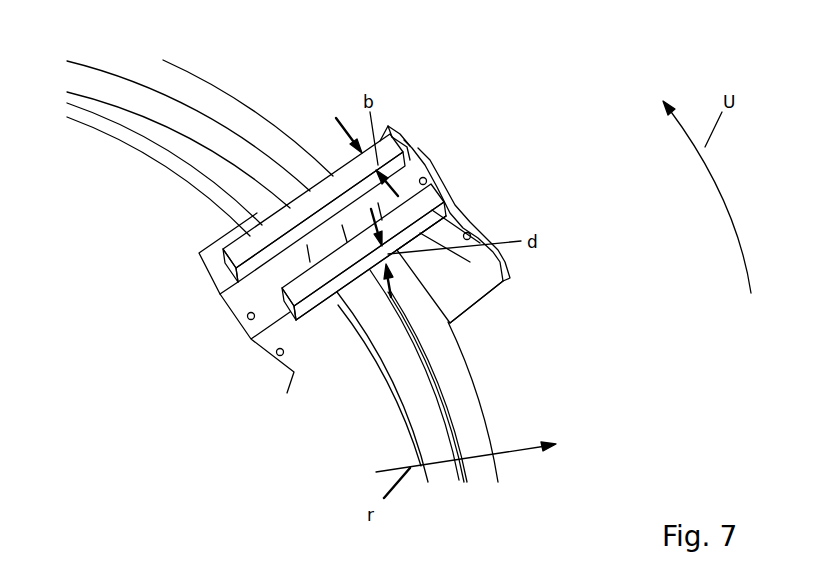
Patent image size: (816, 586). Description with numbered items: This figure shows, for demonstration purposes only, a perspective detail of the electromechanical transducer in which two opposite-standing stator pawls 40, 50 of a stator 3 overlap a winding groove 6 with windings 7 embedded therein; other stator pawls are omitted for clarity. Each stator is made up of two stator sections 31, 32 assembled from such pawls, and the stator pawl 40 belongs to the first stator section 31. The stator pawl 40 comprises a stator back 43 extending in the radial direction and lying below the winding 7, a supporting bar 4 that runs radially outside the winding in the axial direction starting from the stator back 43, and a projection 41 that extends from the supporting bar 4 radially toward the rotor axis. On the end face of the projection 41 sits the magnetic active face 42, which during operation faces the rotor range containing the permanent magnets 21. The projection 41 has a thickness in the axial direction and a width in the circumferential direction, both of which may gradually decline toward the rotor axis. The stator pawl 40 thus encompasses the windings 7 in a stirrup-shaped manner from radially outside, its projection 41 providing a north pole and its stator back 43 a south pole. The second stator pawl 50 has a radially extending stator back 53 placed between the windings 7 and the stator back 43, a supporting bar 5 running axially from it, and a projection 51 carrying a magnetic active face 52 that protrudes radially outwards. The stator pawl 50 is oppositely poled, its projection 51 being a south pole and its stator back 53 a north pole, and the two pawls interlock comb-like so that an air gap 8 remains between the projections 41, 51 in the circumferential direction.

The stator 3 is at (389, 112).
The supporting bar 4 is at (448, 265).
The supporting bar 5 is at (253, 271).
The winding groove 6 is at (344, 328).
The winding 7 is at (465, 400).
The air gap 8 is at (283, 281).
The permanent magnet 21 is at (294, 364).
The first stator section 31 is at (473, 288).
The stator section 32 is at (233, 262).
The stator pawl 40 is at (471, 225).
The projection 41 is at (321, 298).
The magnetic active face 42 is at (432, 203).
The stator back 43 is at (480, 298).
The stator pawl 50 is at (230, 230).
The projection 51 is at (398, 165).
The magnetic active face 52 is at (390, 148).
The stator back 53 is at (303, 297).